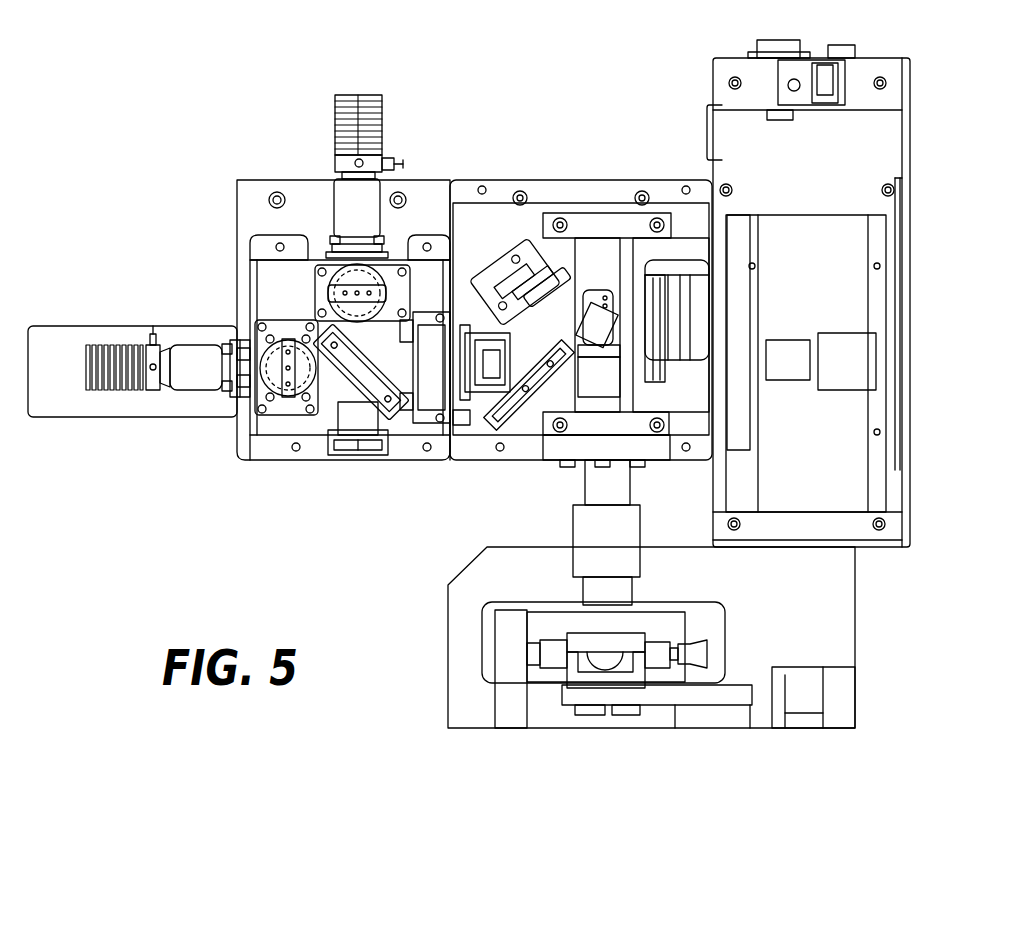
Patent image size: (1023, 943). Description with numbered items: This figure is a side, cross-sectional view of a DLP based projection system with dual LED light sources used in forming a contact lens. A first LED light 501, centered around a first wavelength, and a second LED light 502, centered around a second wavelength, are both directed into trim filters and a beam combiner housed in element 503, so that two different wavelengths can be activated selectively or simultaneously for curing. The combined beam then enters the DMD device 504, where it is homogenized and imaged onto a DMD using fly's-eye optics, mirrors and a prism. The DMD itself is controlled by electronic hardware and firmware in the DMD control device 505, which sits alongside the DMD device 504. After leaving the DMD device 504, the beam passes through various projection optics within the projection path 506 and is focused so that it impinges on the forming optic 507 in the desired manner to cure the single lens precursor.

The first LED light 501 is at (108, 394).
The second LED light 502 is at (325, 134).
The trim filters and beam combiner element 503 is at (450, 462).
The DMD device 504 is at (710, 178).
The DMD control device 505 is at (918, 58).
The projection path 506 is at (552, 623).
The forming optic 507 is at (648, 642).